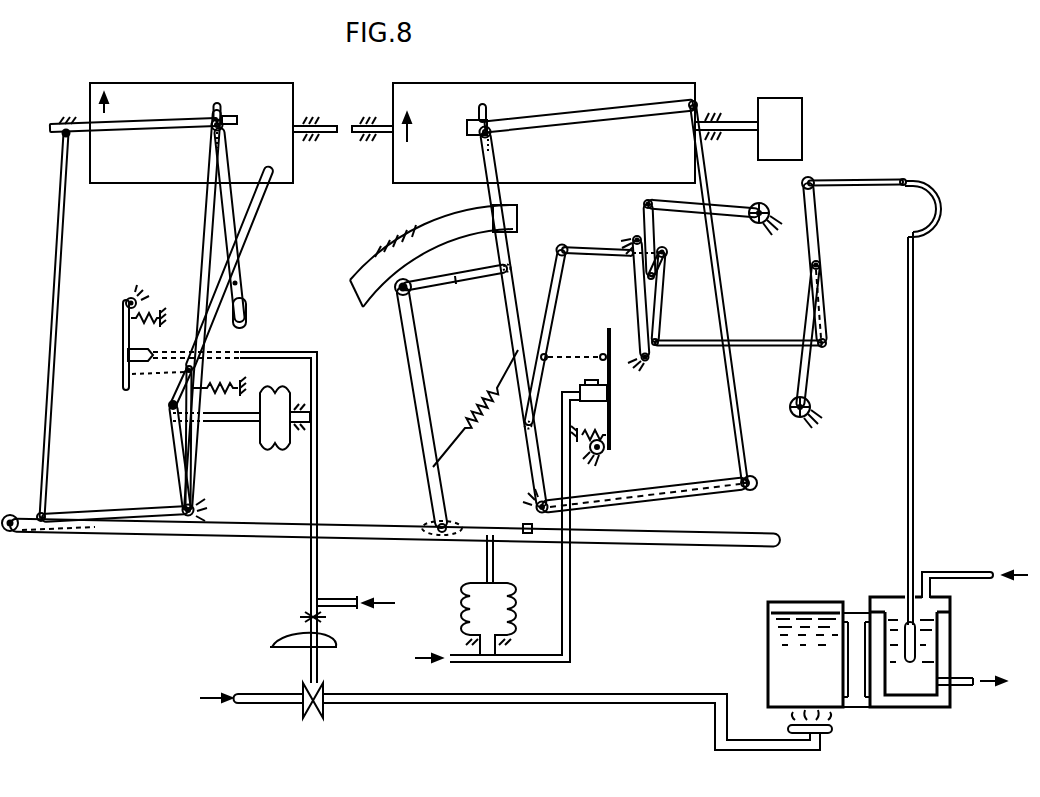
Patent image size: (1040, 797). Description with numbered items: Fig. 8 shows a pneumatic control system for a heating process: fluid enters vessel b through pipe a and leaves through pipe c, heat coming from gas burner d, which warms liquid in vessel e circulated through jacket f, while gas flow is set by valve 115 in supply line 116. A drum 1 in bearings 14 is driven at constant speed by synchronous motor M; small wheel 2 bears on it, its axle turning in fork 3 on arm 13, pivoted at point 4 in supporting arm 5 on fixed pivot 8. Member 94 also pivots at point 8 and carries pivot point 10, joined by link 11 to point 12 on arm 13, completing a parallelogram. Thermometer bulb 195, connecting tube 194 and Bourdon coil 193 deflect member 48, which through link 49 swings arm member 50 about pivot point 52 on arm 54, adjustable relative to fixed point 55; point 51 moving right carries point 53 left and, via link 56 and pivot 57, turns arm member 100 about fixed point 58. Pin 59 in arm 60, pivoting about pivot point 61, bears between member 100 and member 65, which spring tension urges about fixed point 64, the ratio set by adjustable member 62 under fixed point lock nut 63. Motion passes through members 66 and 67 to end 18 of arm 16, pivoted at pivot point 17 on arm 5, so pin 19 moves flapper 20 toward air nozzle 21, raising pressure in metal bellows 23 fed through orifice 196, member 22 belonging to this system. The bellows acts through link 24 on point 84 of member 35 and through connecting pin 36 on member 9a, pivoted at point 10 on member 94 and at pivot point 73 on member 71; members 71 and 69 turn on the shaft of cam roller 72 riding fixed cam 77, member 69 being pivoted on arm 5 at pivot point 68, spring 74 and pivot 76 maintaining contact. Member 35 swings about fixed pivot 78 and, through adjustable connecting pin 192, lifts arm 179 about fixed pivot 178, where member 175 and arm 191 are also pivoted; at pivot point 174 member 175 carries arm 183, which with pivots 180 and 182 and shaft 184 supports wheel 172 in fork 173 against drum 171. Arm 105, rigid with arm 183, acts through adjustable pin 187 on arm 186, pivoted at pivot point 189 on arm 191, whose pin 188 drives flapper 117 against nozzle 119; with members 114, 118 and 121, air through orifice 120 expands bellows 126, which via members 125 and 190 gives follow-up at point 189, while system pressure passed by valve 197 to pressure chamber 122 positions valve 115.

The drum 1 is at (530, 84).
The small wheel 2 is at (487, 112).
The fork 3 is at (467, 128).
The pivot point 4 is at (491, 137).
The supporting arm 5 is at (509, 238).
The fixed pivot 8 is at (530, 498).
The member 9a is at (620, 508).
The pivot point 10 is at (750, 477).
The link 11 is at (719, 300).
The point 12 is at (697, 103).
The arm 13 is at (628, 112).
The bearings 14 is at (724, 133).
The arm 16 is at (554, 297).
The pivot point 17 is at (525, 428).
The end of arm 18 is at (557, 249).
The pin 19 is at (594, 340).
The flapper 20 is at (611, 413).
The air nozzle 21 is at (590, 386).
The member 22 is at (571, 590).
The metal bellows 23 is at (511, 614).
The link 24 is at (493, 565).
The member 35 is at (652, 540).
The connecting pin 36 is at (528, 534).
The member 48 is at (905, 179).
The link 49 is at (852, 181).
The arm member 50 is at (815, 219).
The point 51 is at (816, 192).
The pivot point 52 is at (821, 266).
The point 53 is at (828, 344).
The arm 54 is at (813, 361).
The fixed point 55 is at (814, 400).
The link 56 is at (740, 341).
The pivot 57 is at (658, 340).
The fixed point 58 is at (637, 236).
The pin 59 is at (657, 277).
The arm 60 is at (653, 238).
The pivot point 61 is at (643, 204).
The adjustable member 62 is at (712, 201).
The fixed point lock nut 63 is at (763, 203).
The fixed point 64 is at (650, 357).
The member 65 is at (661, 298).
The member 66 is at (667, 252).
The member 67 is at (588, 251).
The pivot point 68 is at (504, 272).
The member 69 is at (455, 285).
The member 71 is at (415, 342).
The cam roller 72 is at (414, 284).
The pivot point 73 is at (449, 521).
The spring 74 is at (472, 420).
The pivot 76 is at (400, 293).
The fixed cam 77 is at (355, 290).
The fixed pivot 78 is at (14, 532).
The point 84 is at (487, 536).
The member 94 is at (594, 497).
The arm member 100 is at (641, 302).
The arm 105 is at (245, 305).
The member 114 is at (326, 649).
The valve 115 is at (312, 712).
The supply line 116 is at (368, 695).
The flapper 117 is at (123, 348).
The member 118 is at (138, 300).
The nozzle 119 is at (148, 355).
The orifice 120 is at (343, 596).
The member 121 is at (310, 573).
The pressure chamber 122 is at (339, 641).
The member 125 is at (226, 423).
The bellows 126 is at (262, 437).
The drum 171 is at (188, 84).
The wheel 172 is at (221, 107).
The fork 173 is at (238, 121).
The pivot point 174 is at (212, 131).
The member 175 is at (206, 215).
The fixed pivot 178 is at (197, 508).
The arm 179 is at (96, 514).
The pivot 180 is at (48, 513).
The pivot 182 is at (61, 138).
The arm 183 is at (135, 125).
The shaft 184 is at (315, 118).
The arm 186 is at (259, 212).
The adjustable pin 187 is at (236, 285).
The pin 188 is at (182, 380).
The pivot point 189 is at (168, 407).
The member 190 is at (176, 422).
The arm 191 is at (58, 243).
The adjustable connecting pin 192 is at (162, 530).
The Bourdon coil 193 is at (942, 214).
The connecting tube 194 is at (913, 346).
The thermometer bulb 195 is at (914, 641).
The orifice 196 is at (462, 657).
The valve 197 is at (302, 617).
The pipe a is at (948, 572).
The vessel b is at (940, 660).
The pipe c is at (966, 686).
The gas burner d is at (826, 731).
The liquid heating vessel e is at (780, 665).
The jacket f is at (906, 706).
The synchronous motor M is at (780, 129).